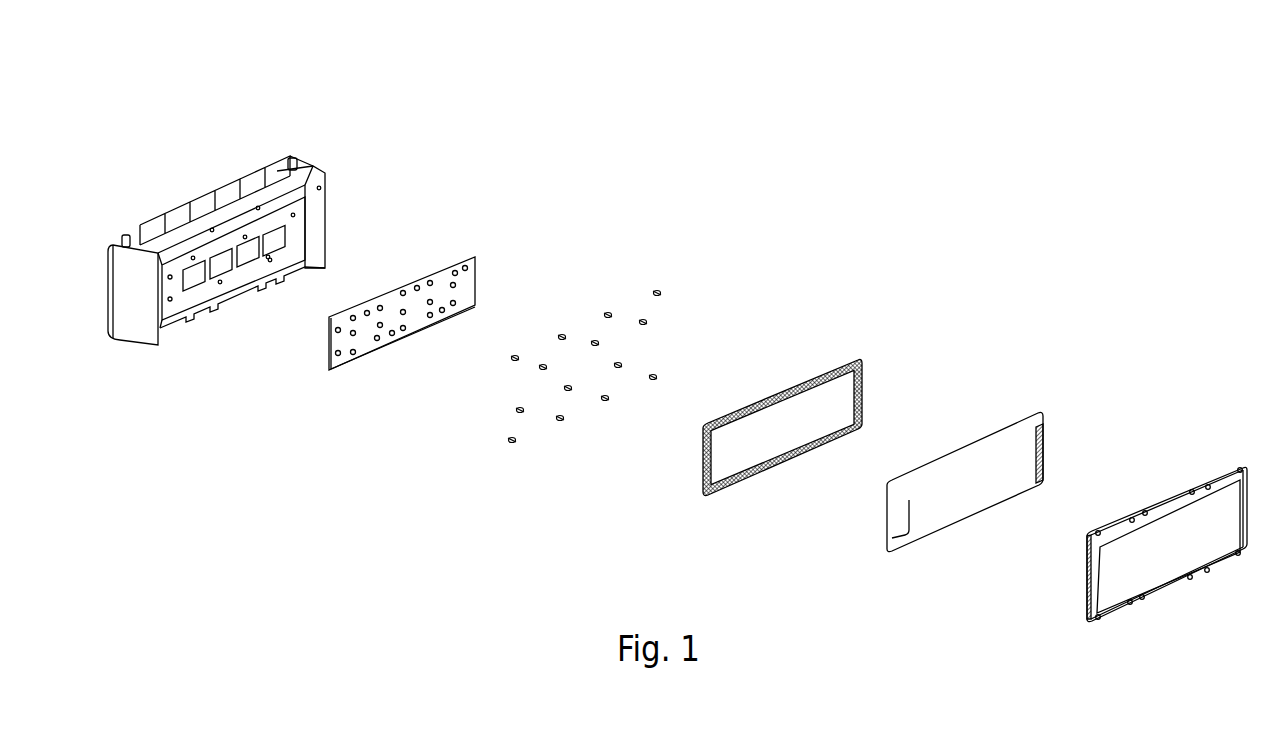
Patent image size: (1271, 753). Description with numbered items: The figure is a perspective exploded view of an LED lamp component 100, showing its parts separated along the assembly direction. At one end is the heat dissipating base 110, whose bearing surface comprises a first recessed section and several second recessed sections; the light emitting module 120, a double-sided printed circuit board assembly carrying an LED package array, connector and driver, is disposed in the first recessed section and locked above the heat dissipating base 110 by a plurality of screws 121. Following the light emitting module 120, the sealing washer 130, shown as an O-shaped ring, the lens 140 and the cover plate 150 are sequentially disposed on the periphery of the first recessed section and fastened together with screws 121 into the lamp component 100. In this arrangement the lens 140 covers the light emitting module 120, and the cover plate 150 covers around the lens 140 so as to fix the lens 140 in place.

The LED lamp component 100 is at (301, 61).
The heat dissipating base 110 is at (320, 180).
The light emitting module 120 is at (467, 257).
The screws 121 is at (653, 292).
The sealing washer 130 is at (860, 357).
The lens 140 is at (1025, 423).
The cover plate 150 is at (1220, 470).